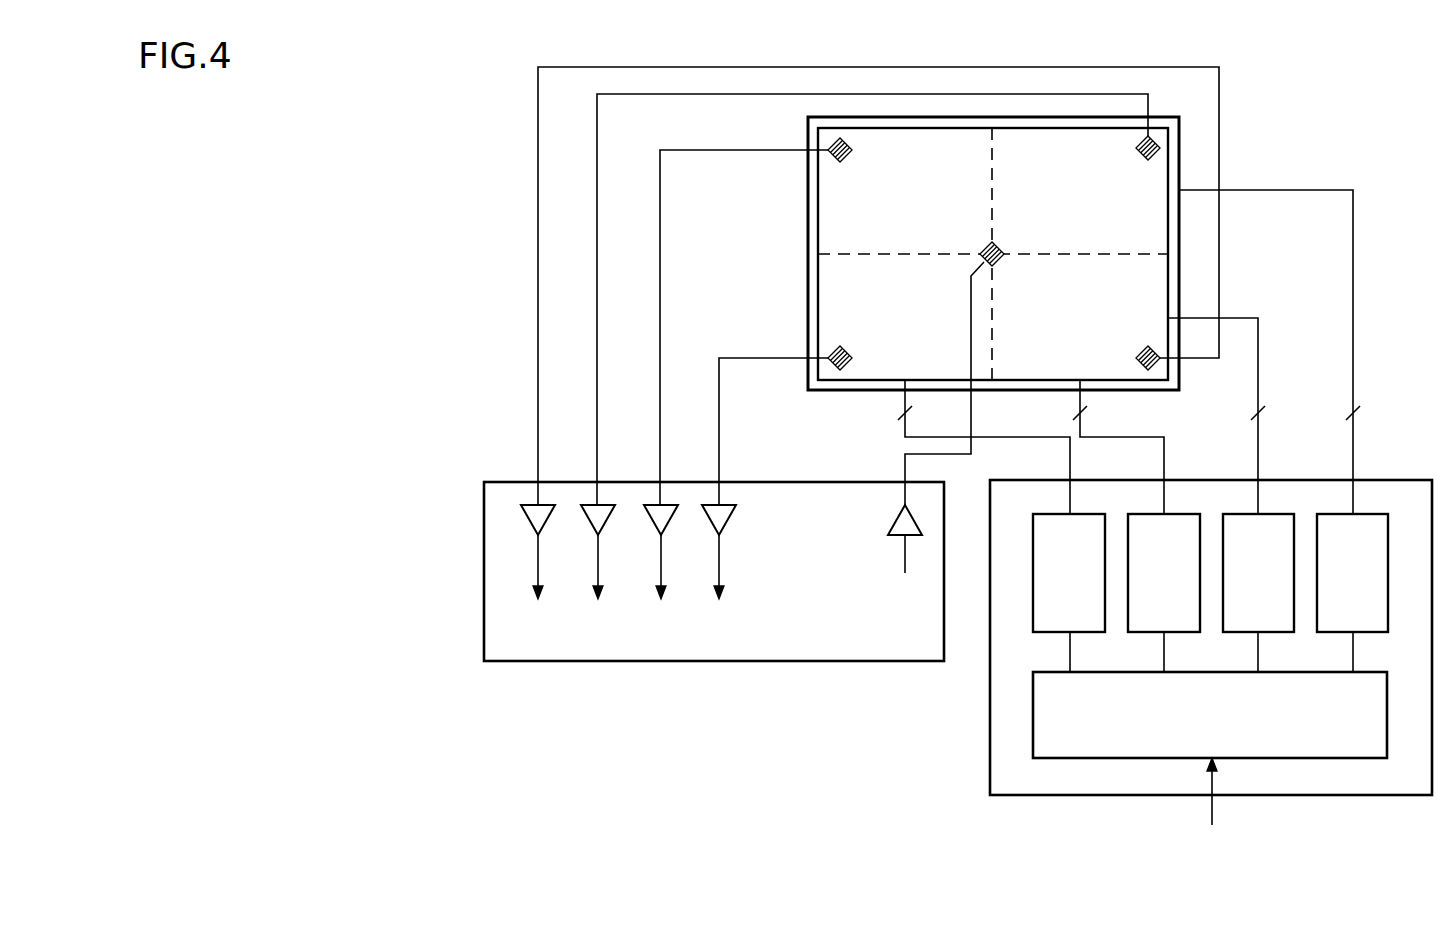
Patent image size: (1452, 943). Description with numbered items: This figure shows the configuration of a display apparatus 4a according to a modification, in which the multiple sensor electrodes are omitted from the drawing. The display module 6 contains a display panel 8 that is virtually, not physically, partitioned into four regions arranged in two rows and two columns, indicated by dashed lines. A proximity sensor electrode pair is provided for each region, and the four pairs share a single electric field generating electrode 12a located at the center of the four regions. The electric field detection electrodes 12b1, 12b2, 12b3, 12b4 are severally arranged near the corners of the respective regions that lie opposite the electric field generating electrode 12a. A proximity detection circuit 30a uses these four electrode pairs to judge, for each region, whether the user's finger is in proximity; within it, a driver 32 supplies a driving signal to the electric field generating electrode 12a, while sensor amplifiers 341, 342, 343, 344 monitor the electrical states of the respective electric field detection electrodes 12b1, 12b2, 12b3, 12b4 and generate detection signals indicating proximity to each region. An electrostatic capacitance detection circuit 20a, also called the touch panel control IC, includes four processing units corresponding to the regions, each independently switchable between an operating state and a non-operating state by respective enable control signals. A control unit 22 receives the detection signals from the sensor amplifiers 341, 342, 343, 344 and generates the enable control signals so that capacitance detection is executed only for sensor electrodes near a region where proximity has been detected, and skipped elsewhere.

The display apparatus 4a is at (984, 910).
The display module 6 is at (808, 182).
The display panel 8 is at (818, 239).
The electric field generating electrode 12a is at (998, 247).
The electric field detection electrode 12b1 is at (851, 155).
The electric field detection electrode 12b2 is at (1146, 160).
The electric field detection electrode 12b3 is at (843, 346).
The electric field detection electrode 12b4 is at (1143, 346).
The proximity detection circuit 30a is at (825, 661).
The driver 32 is at (893, 520).
The sensor amplifier 341 is at (667, 526).
The sensor amplifier 342 is at (603, 526).
The sensor amplifier 343 is at (725, 526).
The sensor amplifier 344 is at (533, 526).
The electrostatic capacitance detection circuit 20a is at (1038, 796).
The control unit 22 is at (1033, 697).